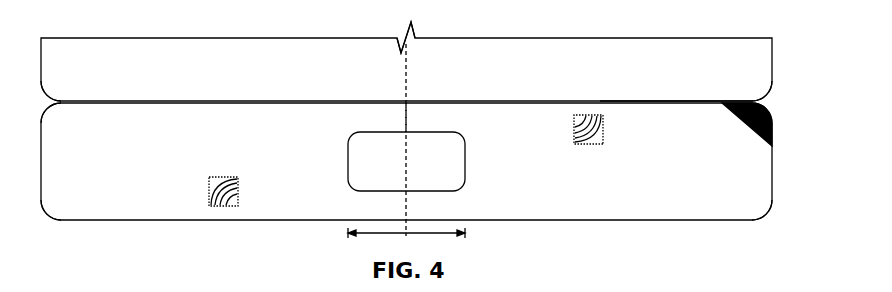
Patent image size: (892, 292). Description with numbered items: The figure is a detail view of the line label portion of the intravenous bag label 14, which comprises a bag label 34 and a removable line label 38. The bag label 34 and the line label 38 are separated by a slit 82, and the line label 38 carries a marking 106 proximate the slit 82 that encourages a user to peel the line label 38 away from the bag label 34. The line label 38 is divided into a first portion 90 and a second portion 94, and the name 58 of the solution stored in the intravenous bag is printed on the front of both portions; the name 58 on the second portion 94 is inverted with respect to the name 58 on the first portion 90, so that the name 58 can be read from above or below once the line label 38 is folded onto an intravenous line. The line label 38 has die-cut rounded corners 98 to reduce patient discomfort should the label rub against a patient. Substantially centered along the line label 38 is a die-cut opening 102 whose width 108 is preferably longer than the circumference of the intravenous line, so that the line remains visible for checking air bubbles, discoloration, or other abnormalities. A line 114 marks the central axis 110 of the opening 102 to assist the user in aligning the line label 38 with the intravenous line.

The intravenous bag label 14 is at (441, 133).
The bag label 34 is at (691, 38).
The line label 38 is at (441, 136).
The name of the solution 58 is at (110, 165).
The slit 82 is at (703, 101).
The first portion 90 is at (199, 198).
The second portion 94 is at (630, 206).
The rounded corners 98 is at (44, 100).
The opening 102 is at (443, 172).
The marking 106 is at (772, 128).
The width 108 is at (440, 237).
The central axis 110 is at (406, 60).
The line 114 is at (406, 117).